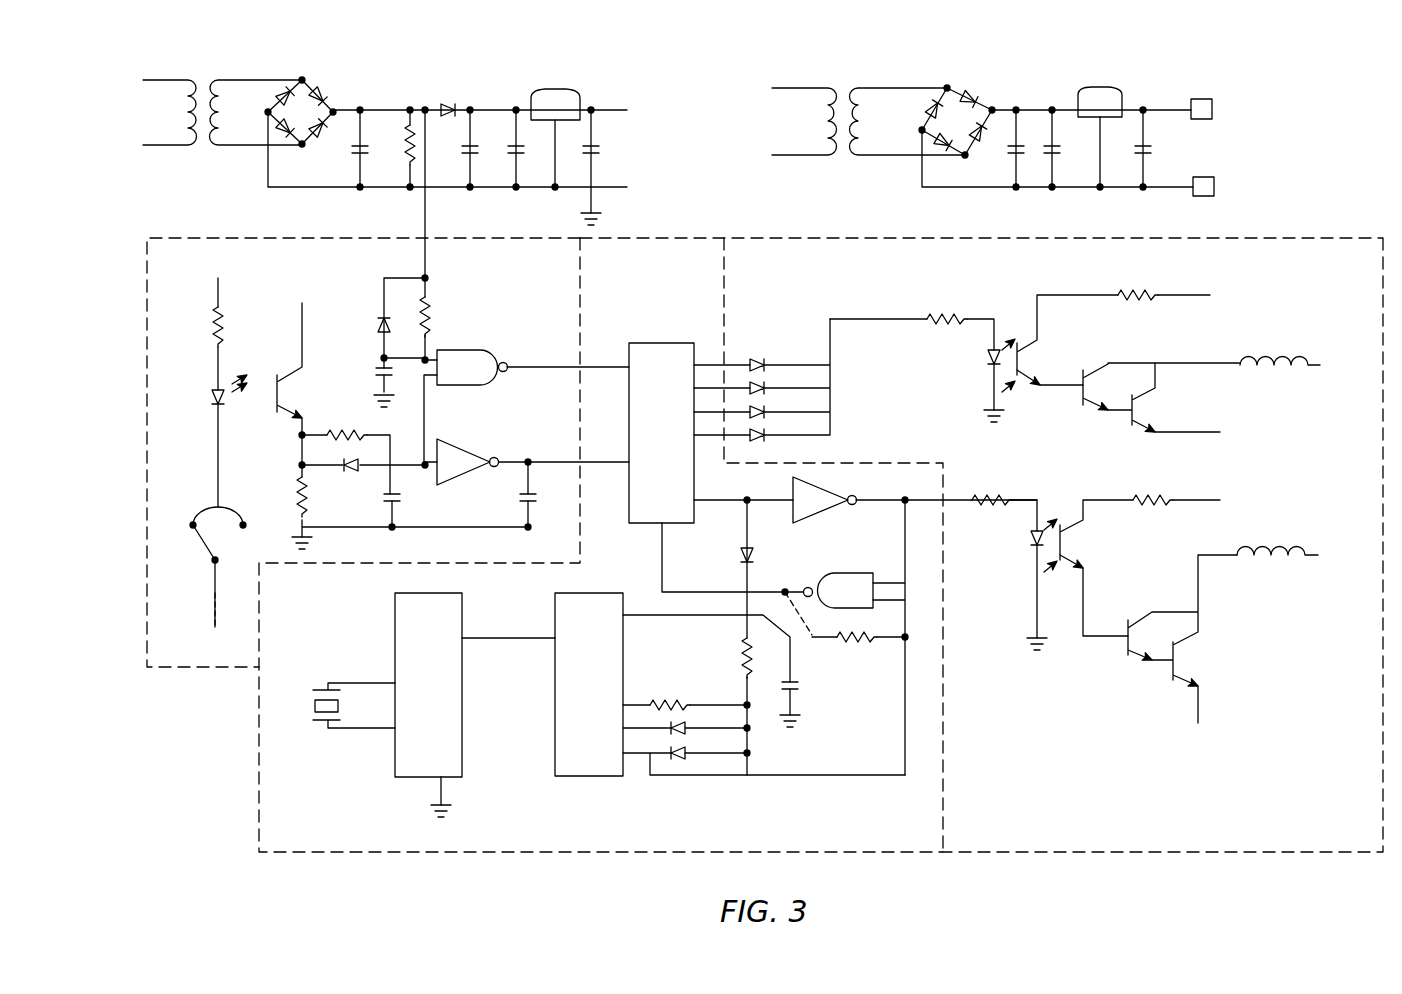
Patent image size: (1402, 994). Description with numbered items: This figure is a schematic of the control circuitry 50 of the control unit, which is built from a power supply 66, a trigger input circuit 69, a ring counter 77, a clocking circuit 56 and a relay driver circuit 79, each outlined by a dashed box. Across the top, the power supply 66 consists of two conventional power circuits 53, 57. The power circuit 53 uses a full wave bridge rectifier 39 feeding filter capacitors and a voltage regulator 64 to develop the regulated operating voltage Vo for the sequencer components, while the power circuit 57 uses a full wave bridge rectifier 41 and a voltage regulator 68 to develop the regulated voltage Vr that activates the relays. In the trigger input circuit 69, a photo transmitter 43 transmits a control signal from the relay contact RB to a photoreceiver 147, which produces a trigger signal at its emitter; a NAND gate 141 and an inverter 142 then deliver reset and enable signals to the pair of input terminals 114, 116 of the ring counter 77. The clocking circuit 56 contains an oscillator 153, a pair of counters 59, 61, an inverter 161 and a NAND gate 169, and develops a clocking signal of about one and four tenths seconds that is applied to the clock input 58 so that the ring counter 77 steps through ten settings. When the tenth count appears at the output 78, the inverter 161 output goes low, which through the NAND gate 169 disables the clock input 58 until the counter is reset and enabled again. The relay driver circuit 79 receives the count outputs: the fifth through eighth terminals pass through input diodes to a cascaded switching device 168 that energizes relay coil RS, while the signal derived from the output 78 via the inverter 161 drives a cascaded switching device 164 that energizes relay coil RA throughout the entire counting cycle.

The full wave bridge rectifier 39 is at (302, 78).
The full wave bridge rectifier 41 is at (963, 88).
The photo transmitter 43 is at (210, 398).
The control circuitry 50 is at (743, 128).
The power circuit 53 is at (475, 135).
The clocking circuit 56 is at (535, 856).
The power circuit 57 is at (1079, 116).
The clock input 58 is at (674, 526).
The counter 59 is at (395, 624).
The counter 61 is at (555, 624).
The voltage regulator 64 is at (555, 89).
The power supply 66 is at (695, 144).
The voltage regulator 68 is at (1100, 87).
The trigger input circuit 69 is at (360, 236).
The ring counter 77 is at (688, 236).
The output 78 is at (710, 500).
The relay driver circuit 79 is at (905, 236).
The input terminal 114 is at (609, 344).
The input terminal 116 is at (608, 481).
The NAND gate 141 is at (486, 348).
The inverter 142 is at (473, 439).
The photoreceiver 147 is at (288, 392).
The oscillator 153 is at (313, 704).
The inverter 161 is at (828, 505).
The cascaded switching device 164 is at (1138, 668).
The cascaded switching device 168 is at (1121, 420).
The NAND gate 169 is at (818, 574).